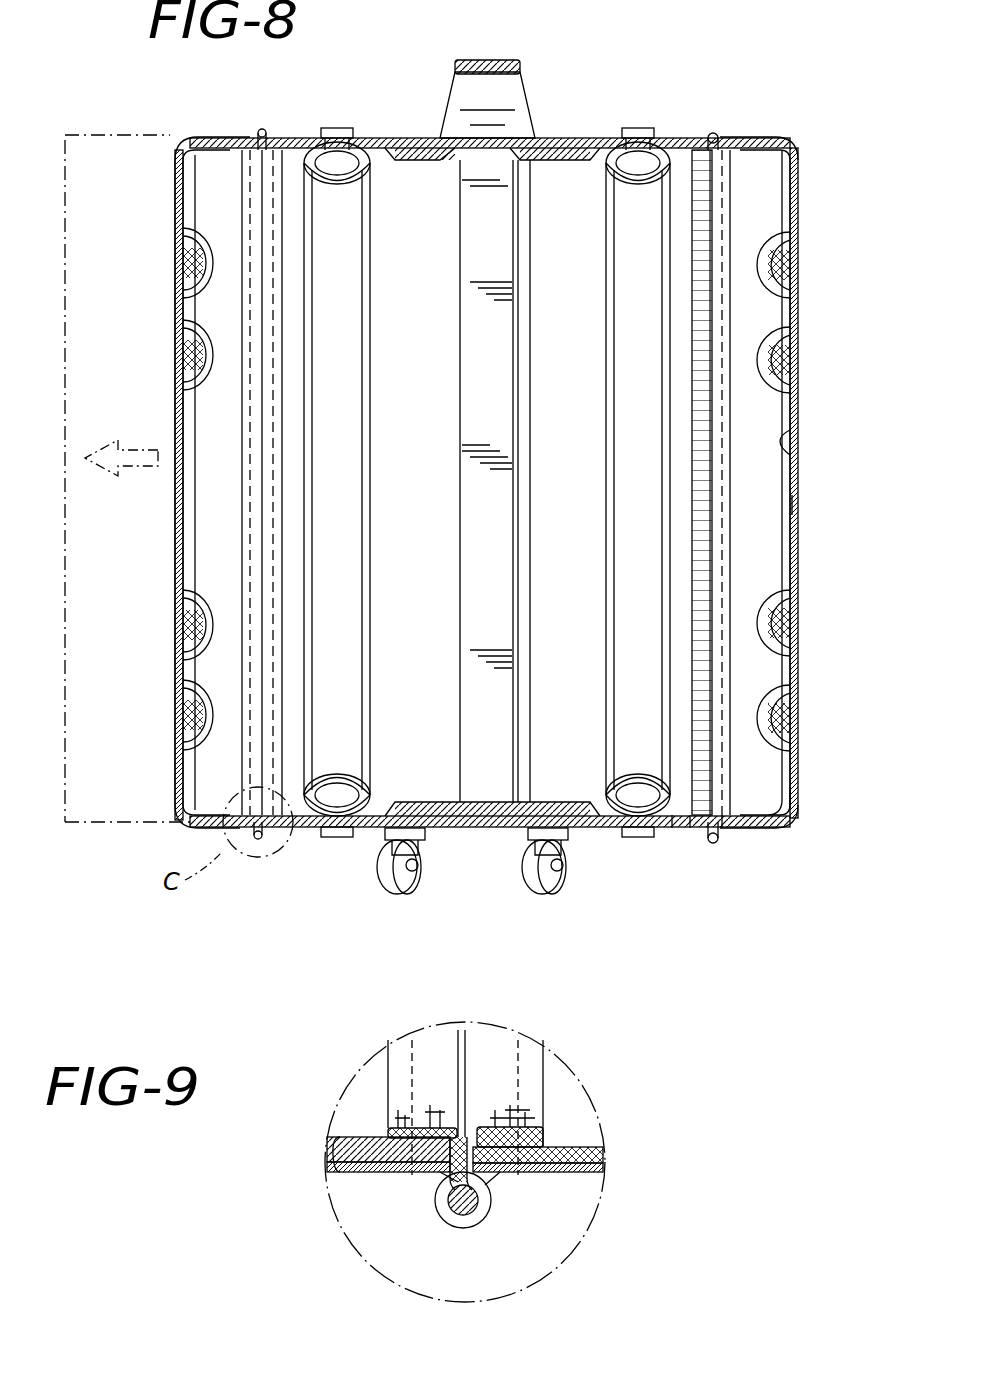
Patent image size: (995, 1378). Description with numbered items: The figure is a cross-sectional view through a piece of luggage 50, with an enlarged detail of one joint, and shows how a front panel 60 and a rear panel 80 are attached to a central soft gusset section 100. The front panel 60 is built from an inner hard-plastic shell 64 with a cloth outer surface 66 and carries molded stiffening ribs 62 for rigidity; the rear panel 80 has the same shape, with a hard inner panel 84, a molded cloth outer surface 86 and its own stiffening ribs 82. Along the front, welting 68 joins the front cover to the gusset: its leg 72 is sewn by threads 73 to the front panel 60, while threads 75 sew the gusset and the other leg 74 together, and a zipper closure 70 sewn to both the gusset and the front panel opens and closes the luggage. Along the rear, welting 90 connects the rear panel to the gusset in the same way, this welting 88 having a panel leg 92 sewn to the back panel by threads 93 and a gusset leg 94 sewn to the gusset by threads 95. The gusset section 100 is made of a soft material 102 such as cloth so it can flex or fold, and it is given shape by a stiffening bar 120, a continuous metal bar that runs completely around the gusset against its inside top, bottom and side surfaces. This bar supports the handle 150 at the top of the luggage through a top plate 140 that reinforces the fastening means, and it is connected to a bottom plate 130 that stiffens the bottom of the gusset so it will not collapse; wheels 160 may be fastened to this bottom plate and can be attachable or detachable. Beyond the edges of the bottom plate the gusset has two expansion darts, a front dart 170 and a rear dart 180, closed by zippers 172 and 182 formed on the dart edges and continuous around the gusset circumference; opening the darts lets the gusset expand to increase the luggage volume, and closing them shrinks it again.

In FIG. 8, the luggage 50 is at (215, 900).
In FIG. 8, the front panel 60 is at (800, 145).
In FIG. 8, the stiffening ribs 62 is at (780, 350).
In FIG. 8, the inner hard-plastic shell 64 is at (775, 440).
In FIG. 8, the cloth outer surface 66 is at (790, 502).
In FIG. 8, the welting 68 is at (716, 845).
In FIG. 8, the zipper closure 70 is at (712, 130).
In FIG. 8, the leg 72 is at (792, 795).
In FIG. 8, the threads 73 is at (724, 825).
In FIG. 8, the other leg 74 is at (672, 830).
In FIG. 8, the threads 75 is at (690, 830).
In FIG. 8, the rear panel 80 is at (205, 135).
In FIG. 9, the rear panel 80 is at (322, 1156).
In FIG. 8, the stiffening ribs 82 is at (195, 350).
In FIG. 8, the hard inner panel 84 is at (195, 522).
In FIG. 9, the hard inner panel 84 is at (448, 1140).
In FIG. 8, the molded cloth outer surface 86 is at (185, 560).
In FIG. 9, the molded cloth outer surface 86 is at (365, 1168).
In FIG. 9, the welting 88 is at (485, 1220).
In FIG. 8, the welting 90 is at (264, 128).
In FIG. 9, the welting 90 is at (416, 1229).
In FIG. 9, the panel leg 92 is at (395, 1127).
In FIG. 9, the threads 93 is at (440, 1172).
In FIG. 9, the gusset leg 94 is at (540, 1130).
In FIG. 9, the threads 95 is at (505, 1175).
In FIG. 8, the central soft gusset section 100 is at (432, 132).
In FIG. 9, the central soft gusset section 100 is at (595, 1172).
In FIG. 8, the soft material 102 is at (375, 140).
In FIG. 9, the soft material 102 is at (600, 1158).
In FIG. 8, the stiffening bar 120 is at (490, 318).
In FIG. 8, the bottom plate 130 is at (470, 800).
In FIG. 8, the top plate 140 is at (545, 130).
In FIG. 8, the handle 150 is at (515, 65).
In FIG. 8, the wheels 160 is at (525, 880).
In FIG. 8, the expansion dart 170 is at (640, 710).
In FIG. 8, the zipper 172 is at (636, 128).
In FIG. 8, the expansion dart 180 is at (335, 700).
In FIG. 8, the zipper 182 is at (338, 125).